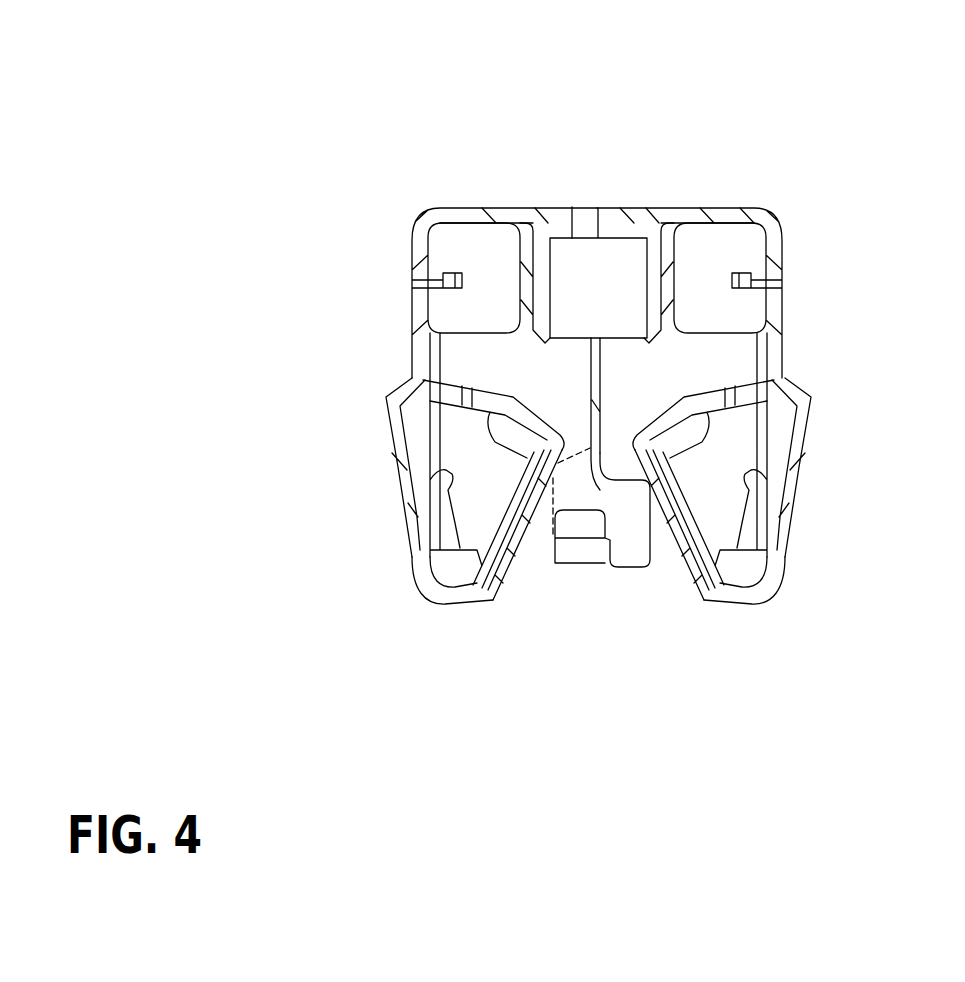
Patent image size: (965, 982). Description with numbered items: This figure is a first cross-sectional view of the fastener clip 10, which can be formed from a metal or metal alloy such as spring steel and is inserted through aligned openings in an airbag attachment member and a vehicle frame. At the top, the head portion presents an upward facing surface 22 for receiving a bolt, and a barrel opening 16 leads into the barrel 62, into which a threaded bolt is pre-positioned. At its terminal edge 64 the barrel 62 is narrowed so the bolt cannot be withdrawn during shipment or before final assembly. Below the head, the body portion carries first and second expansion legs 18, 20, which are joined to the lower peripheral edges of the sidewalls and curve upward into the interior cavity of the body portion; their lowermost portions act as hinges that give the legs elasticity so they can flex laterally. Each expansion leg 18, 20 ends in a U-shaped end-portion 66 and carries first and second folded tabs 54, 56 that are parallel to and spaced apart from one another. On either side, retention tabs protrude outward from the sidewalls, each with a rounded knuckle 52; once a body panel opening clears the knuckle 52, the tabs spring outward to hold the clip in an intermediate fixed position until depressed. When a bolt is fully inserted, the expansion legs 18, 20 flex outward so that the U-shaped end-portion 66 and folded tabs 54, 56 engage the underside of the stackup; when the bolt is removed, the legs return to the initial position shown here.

The fastener clip 10 is at (855, 152).
The barrel opening 16 is at (548, 283).
The first expansion leg 18 is at (739, 606).
The second expansion leg 20 is at (458, 606).
The upward facing surface 22 is at (720, 207).
The rounded knuckle 52 is at (395, 383).
The first folded tab 54 is at (706, 468).
The second folded tab 56 is at (443, 457).
The barrel 62 is at (570, 207).
The terminal edge 64 is at (648, 340).
The U-shaped end-portion 66 is at (522, 393).